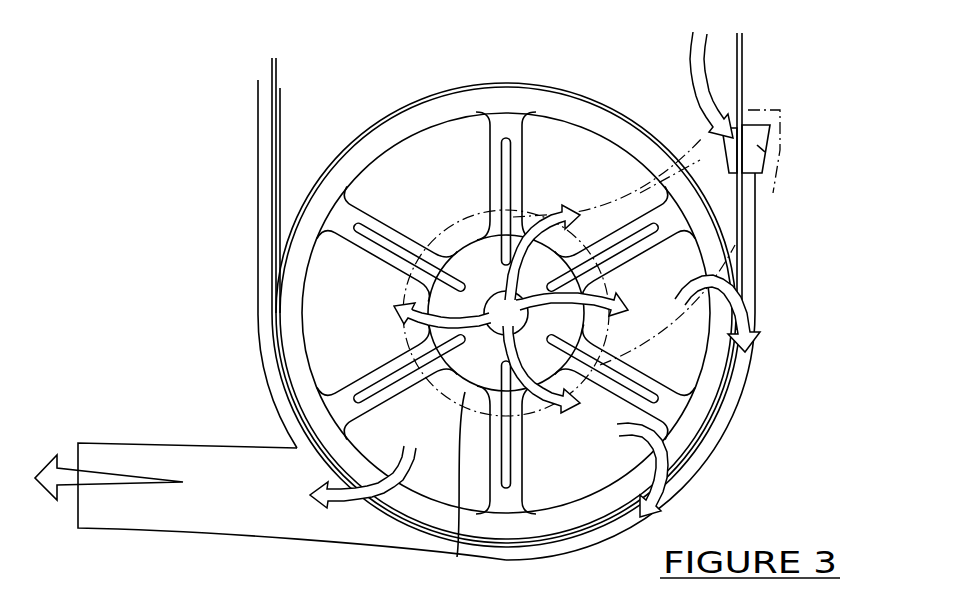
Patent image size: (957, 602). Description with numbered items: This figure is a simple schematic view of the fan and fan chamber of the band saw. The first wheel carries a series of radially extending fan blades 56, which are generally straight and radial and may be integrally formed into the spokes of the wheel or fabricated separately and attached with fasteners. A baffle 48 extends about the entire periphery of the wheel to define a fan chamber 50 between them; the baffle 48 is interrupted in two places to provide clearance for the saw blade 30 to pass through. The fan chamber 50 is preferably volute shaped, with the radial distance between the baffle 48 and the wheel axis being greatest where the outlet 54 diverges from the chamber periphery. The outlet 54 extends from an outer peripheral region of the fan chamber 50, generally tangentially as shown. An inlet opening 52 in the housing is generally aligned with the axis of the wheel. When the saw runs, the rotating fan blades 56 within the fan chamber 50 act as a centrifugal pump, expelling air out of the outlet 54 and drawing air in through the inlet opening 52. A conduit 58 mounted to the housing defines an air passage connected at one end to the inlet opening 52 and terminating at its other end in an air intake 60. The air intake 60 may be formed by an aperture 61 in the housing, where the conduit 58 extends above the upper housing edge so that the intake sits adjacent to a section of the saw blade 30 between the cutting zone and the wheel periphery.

The saw blade 30 is at (745, 73).
The baffle 48 is at (700, 467).
The fan chamber 50 is at (506, 272).
The inlet opening 52 is at (457, 557).
The outlet 54 is at (77, 517).
The fan blades 56 is at (497, 152).
The conduit 58 is at (773, 193).
The air intake 60 is at (768, 127).
The aperture 61 is at (758, 150).